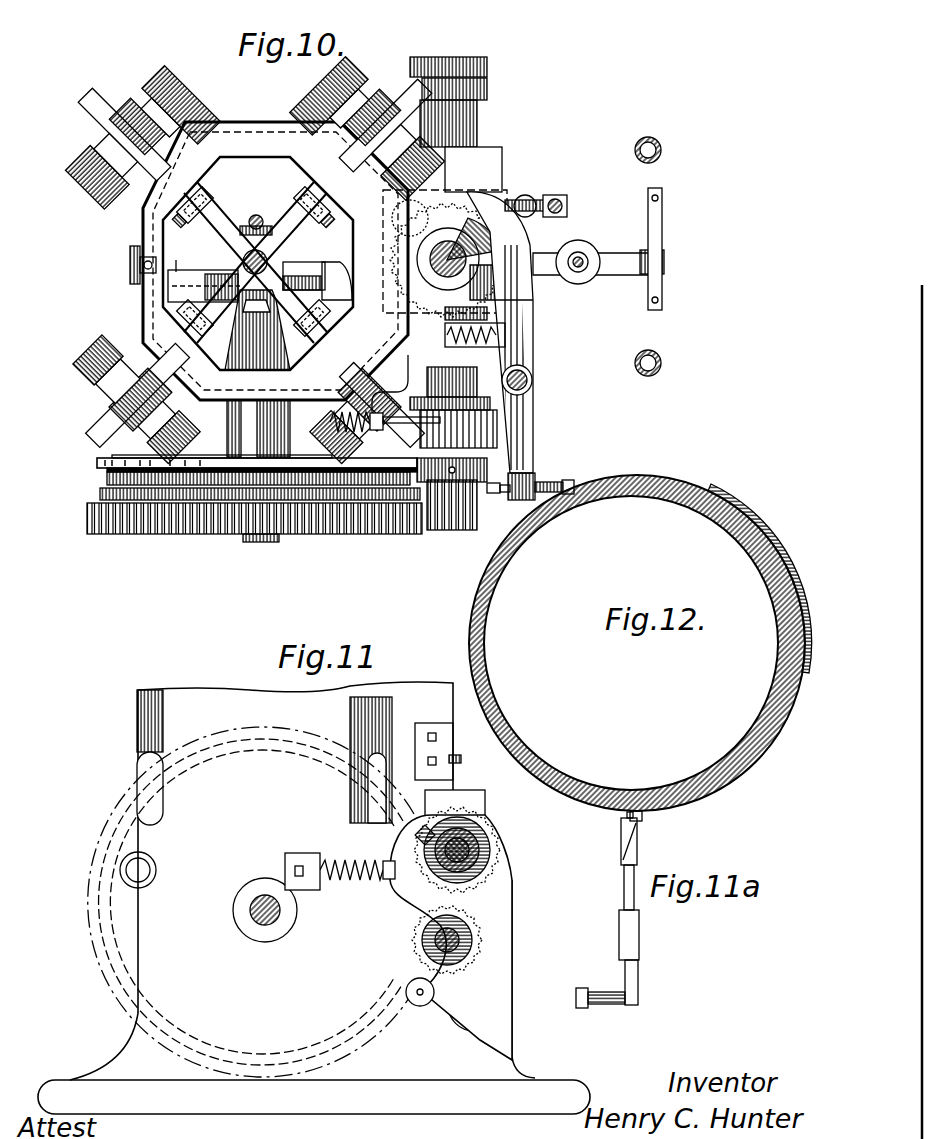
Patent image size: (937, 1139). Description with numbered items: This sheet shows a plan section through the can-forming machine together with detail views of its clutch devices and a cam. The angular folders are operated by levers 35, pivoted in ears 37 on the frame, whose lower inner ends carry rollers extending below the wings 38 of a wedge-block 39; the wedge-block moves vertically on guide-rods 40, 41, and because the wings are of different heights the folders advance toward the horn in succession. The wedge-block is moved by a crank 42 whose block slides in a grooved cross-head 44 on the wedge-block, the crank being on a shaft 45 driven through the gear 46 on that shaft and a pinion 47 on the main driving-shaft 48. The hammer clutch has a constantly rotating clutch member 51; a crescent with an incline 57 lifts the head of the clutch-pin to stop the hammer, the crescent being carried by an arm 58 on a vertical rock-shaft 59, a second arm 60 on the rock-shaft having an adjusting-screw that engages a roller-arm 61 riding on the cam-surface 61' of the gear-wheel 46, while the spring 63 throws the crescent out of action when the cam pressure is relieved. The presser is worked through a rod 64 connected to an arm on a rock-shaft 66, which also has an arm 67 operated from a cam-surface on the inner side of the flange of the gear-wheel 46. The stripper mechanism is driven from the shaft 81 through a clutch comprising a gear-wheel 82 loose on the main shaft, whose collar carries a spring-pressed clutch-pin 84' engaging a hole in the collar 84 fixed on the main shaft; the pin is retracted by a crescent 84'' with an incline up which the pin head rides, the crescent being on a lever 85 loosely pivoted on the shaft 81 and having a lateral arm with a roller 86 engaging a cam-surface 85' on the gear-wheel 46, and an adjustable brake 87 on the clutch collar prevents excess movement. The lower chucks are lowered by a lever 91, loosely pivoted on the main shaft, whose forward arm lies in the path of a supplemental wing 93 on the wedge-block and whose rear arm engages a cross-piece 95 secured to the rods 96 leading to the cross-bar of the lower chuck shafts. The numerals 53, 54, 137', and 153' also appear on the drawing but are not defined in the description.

In FIG. 10, the levers 35 is at (100, 120).
In FIG. 10, the ears 37 is at (195, 100).
In FIG. 10, the wings 38 is at (298, 210).
In FIG. 10, the wedge-block 39 is at (244, 256).
In FIG. 10, the guide-rod 40 is at (204, 287).
In FIG. 10, the guide-rod 41 is at (253, 215).
In FIG. 10, the crank 42 is at (268, 325).
In FIG. 10, the grooved cross-head 44 is at (176, 268).
In FIG. 10, the shaft 45 is at (258, 546).
In FIG. 11, the shaft 45 is at (252, 915).
In FIG. 10, the gear 46 is at (242, 520).
In FIG. 11, the gear 46 is at (100, 845).
In FIG. 10, the pinion 47 is at (452, 520).
In FIG. 11, the main driving-shaft 48 is at (490, 850).
In FIG. 10, the clutch member 51 is at (428, 262).
In FIG. 10, the block 53 is at (485, 304).
In FIG. 10, the link 54 is at (502, 205).
In FIG. 10, the incline 57 is at (490, 248).
In FIG. 10, the arm 58 is at (528, 320).
In FIG. 10, the vertical rock-shaft 59 is at (528, 381).
In FIG. 10, the second arm 60 is at (528, 442).
In FIG. 10, the roller-arm 61 is at (496, 506).
In FIG. 10, the cam-surface 61' is at (225, 518).
In FIG. 10, the spring 63 is at (500, 340).
In FIG. 10, the rod 64 is at (136, 266).
In FIG. 10, the rock-shaft 66 is at (128, 300).
In FIG. 10, the arm 67 is at (108, 460).
In FIG. 11, the shaft 81 is at (490, 932).
In FIG. 10, the gear-wheel 82 is at (412, 398).
In FIG. 11, the gear-wheel 82 is at (470, 838).
In FIG. 10, the collar 84 is at (523, 474).
In FIG. 10, the clutch-pin 84' is at (422, 522).
In FIG. 11, the clutch-pin 84' is at (390, 839).
In FIG. 11, the crescent 84'' is at (477, 786).
In FIG. 11A, the crescent 84'' is at (664, 838).
In FIG. 10, the lever 85 is at (378, 489).
In FIG. 11, the lever 85 is at (346, 888).
In FIG. 11A, the lever 85 is at (633, 936).
In FIG. 10, the cam-surface 85' is at (222, 515).
In FIG. 11, the roller 86 is at (406, 992).
In FIG. 11, the adjustable brake 87 is at (466, 805).
In FIG. 10, the lever 91 is at (326, 270).
In FIG. 10, the supplemental wing 93 is at (300, 268).
In FIG. 10, the cross-piece 95 is at (663, 246).
In FIG. 10, the rods 96 is at (660, 200).
In FIG. 12, the ring 137' is at (640, 648).
In FIG. 10, the plate 153' is at (222, 492).